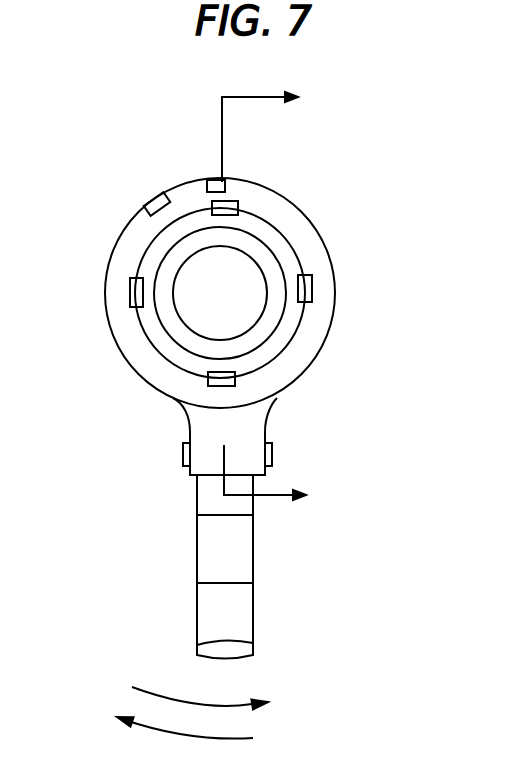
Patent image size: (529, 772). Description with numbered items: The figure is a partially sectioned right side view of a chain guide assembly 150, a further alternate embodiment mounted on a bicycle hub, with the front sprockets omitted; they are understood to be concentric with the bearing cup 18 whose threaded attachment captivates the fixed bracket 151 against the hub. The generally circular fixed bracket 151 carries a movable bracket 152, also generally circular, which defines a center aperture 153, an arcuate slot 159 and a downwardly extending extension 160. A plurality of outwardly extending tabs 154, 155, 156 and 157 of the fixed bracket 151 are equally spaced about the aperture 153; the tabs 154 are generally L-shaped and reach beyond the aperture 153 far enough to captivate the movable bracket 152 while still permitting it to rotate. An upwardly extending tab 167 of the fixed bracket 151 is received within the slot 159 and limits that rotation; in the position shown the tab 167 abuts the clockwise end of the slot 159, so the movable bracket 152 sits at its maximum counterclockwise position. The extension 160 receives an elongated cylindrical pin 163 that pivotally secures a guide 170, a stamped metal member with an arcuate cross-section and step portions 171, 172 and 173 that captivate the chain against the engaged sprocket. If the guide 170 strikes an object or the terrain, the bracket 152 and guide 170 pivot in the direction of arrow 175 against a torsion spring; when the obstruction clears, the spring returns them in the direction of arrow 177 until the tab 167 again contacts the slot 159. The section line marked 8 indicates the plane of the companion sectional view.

The section line 8- 8 is at (277, 299).
The bearing cup 18 is at (186, 251).
The chain guide assembly 150 is at (158, 429).
The fixed bracket 151 is at (186, 188).
The movable bracket 152 is at (297, 227).
The center aperture 153 is at (290, 247).
The tab 154 is at (236, 207).
The tab 155 is at (308, 303).
The tab 156 is at (228, 379).
The tab 157 is at (130, 291).
The arcuate slot 159 is at (167, 197).
The extension 160 is at (257, 422).
The pin 163 is at (273, 456).
The tab 167 is at (224, 178).
The guide 170 is at (248, 548).
The step portion 171 is at (210, 511).
The step portion 172 is at (240, 583).
The step portion 173 is at (243, 643).
The arrow 175 is at (220, 738).
The arrow 177 is at (167, 703).